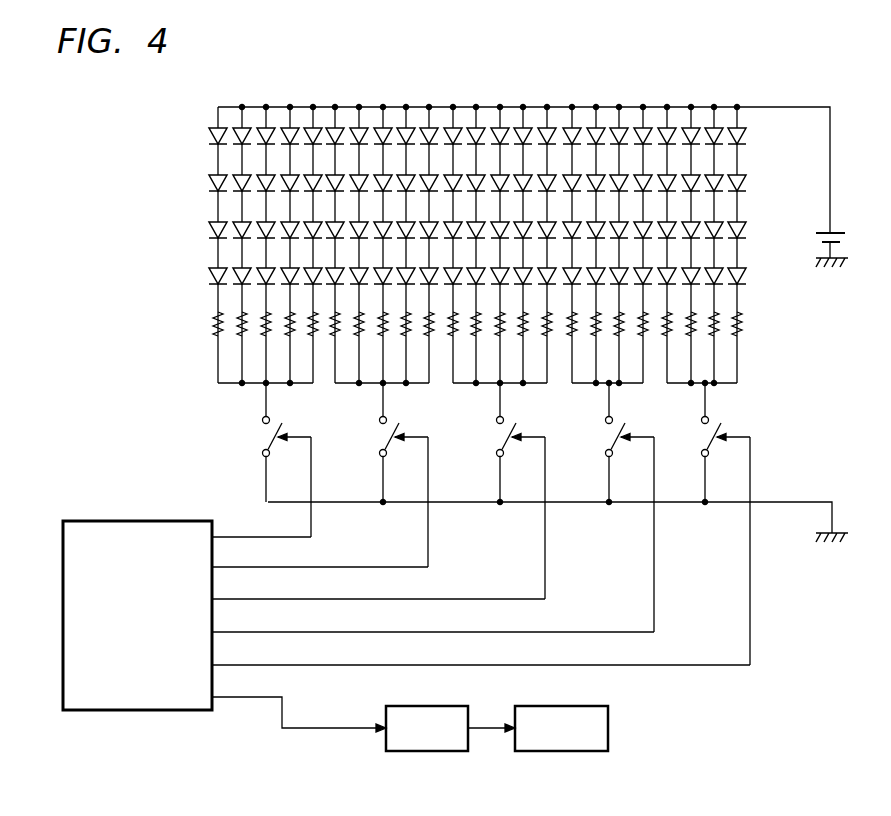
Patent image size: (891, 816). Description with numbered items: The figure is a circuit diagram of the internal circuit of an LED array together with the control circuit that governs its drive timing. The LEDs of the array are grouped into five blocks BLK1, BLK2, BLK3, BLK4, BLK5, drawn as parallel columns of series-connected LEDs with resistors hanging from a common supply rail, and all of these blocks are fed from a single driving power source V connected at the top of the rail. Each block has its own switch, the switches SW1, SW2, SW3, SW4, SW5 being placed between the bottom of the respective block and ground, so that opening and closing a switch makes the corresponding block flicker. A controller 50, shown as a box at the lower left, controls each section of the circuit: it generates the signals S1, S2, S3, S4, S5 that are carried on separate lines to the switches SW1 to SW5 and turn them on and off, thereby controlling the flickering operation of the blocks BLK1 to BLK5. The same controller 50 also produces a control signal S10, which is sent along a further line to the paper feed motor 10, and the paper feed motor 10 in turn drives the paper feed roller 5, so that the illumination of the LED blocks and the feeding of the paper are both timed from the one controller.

The controller 50 is at (185, 521).
The paper feed motor 10 is at (457, 708).
The paper feed roller 5 is at (595, 708).
The switch SW1 is at (262, 441).
The switch SW2 is at (379, 441).
The switch SW3 is at (496, 441).
The switch SW4 is at (605, 441).
The switch SW5 is at (700, 441).
The switching signal S1 is at (234, 535).
The switching signal S2 is at (347, 565).
The switching signal S3 is at (465, 597).
The switching signal S4 is at (582, 630).
The switching signal S5 is at (687, 663).
The control signal S10 is at (317, 725).
The block BLK1 is at (313, 103).
The block BLK2 is at (429, 103).
The block BLK3 is at (547, 103).
The block BLK4 is at (643, 103).
The block BLK5 is at (737, 103).
The driving power source V is at (841, 230).